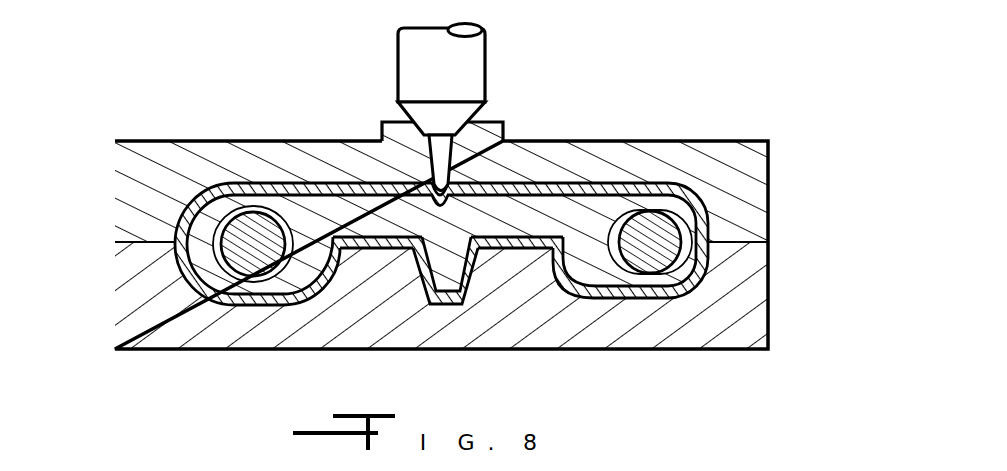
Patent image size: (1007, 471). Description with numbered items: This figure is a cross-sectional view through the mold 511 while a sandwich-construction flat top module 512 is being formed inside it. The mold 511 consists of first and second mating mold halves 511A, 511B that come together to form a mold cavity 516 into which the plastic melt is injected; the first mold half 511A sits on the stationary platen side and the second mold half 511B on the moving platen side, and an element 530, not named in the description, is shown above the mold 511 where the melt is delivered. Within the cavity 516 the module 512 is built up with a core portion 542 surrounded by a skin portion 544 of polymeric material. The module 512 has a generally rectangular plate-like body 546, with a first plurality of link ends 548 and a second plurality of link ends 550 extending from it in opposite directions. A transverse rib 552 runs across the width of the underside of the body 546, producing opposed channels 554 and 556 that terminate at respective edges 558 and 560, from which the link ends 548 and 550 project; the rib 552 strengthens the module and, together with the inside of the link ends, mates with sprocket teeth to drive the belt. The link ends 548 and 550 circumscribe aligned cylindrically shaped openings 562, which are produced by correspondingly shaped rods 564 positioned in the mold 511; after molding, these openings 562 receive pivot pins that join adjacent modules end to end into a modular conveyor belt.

The mold 511 is at (727, 139).
The first mold half 511A is at (743, 175).
The second mold half 511B is at (750, 330).
The flat top module 512 is at (605, 175).
The mold cavity 516 is at (453, 155).
The actuator / nozzle 530 is at (472, 67).
The core portion 542 is at (622, 292).
The skin portion 544 is at (714, 262).
The plate-like body 546 is at (533, 198).
The first plurality of link ends 548 is at (712, 204).
The second plurality of link ends 550 is at (213, 212).
The transverse rib 552 is at (374, 249).
The channel 554 is at (511, 249).
The channel 556 is at (346, 249).
The edge 558 is at (559, 249).
The edge 560 is at (345, 282).
The cylindrically shaped openings 562 is at (218, 261).
The rods 564 is at (648, 232).